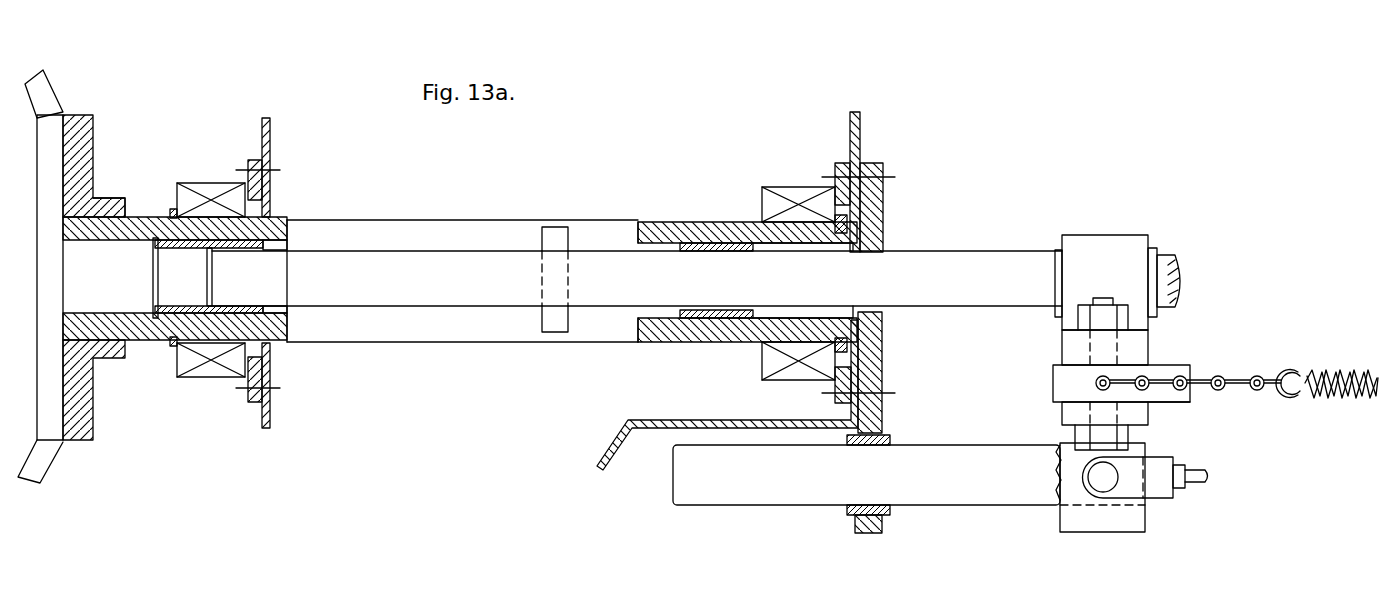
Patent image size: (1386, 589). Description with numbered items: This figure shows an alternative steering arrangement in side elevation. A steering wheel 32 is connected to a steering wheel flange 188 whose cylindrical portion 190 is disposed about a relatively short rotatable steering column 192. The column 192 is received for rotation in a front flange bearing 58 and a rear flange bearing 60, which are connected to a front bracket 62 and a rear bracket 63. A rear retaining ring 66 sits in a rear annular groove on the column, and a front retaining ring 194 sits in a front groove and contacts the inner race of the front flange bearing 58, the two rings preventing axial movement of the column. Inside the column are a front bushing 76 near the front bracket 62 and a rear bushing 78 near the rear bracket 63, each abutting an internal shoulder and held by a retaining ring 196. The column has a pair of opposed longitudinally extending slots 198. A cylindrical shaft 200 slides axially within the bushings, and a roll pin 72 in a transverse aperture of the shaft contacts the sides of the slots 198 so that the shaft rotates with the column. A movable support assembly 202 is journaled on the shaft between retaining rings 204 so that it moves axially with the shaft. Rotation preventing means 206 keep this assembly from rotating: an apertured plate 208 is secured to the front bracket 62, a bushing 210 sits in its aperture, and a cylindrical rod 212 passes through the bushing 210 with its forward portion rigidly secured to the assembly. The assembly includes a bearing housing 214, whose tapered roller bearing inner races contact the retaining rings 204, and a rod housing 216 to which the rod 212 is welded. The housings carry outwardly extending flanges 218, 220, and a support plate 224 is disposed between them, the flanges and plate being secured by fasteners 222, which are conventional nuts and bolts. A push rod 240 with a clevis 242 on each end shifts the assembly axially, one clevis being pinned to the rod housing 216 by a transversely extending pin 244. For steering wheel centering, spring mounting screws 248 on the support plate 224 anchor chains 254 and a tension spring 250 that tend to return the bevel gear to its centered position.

The steering wheel 32 is at (56, 92).
The steering wheel flange 188 is at (95, 125).
The cylindrical portion 190 is at (118, 200).
The short rotatable steering column 192 is at (288, 224).
The rear bushing 78 is at (240, 250).
The retaining ring 196 is at (155, 245).
The cylindrical shaft 200 is at (426, 288).
The rear flange bearing 60 is at (210, 182).
The rear retaining ring 66 is at (172, 215).
The rear bracket 63 is at (272, 135).
The roll pin 72 is at (555, 227).
The front retaining ring 194 is at (870, 215).
The front bushing 76 is at (715, 243).
The longitudinally extending slots 198 is at (640, 230).
The front flange bearing 58 is at (785, 187).
The front bracket 62 is at (862, 124).
The apertured plate 208 is at (885, 345).
The rotation preventing means 206 is at (854, 502).
The cylindrical rod 212 is at (980, 494).
The bushing 210 is at (893, 522).
The bearing housing 214 is at (1115, 235).
The retaining rings 204 is at (1055, 252).
The fasteners 222 is at (1115, 298).
The outwardly extending flange 218 is at (1148, 343).
The spring mounting screws or pins 248 is at (1055, 383).
The chains 254 is at (1243, 380).
The right tension spring 250 is at (1350, 372).
The outwardly extending flange 220 is at (1148, 418).
The support plate 224 is at (1172, 403).
The movable support assembly 202 is at (1135, 516).
The rod housing 216 is at (1068, 532).
The transversely extending pin 244 is at (1103, 485).
The clevis 242 is at (1163, 500).
The push rod 240 is at (1193, 480).